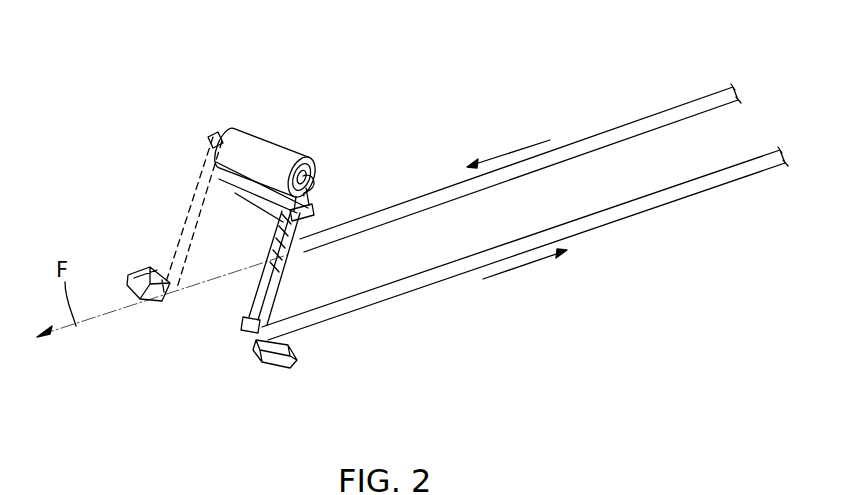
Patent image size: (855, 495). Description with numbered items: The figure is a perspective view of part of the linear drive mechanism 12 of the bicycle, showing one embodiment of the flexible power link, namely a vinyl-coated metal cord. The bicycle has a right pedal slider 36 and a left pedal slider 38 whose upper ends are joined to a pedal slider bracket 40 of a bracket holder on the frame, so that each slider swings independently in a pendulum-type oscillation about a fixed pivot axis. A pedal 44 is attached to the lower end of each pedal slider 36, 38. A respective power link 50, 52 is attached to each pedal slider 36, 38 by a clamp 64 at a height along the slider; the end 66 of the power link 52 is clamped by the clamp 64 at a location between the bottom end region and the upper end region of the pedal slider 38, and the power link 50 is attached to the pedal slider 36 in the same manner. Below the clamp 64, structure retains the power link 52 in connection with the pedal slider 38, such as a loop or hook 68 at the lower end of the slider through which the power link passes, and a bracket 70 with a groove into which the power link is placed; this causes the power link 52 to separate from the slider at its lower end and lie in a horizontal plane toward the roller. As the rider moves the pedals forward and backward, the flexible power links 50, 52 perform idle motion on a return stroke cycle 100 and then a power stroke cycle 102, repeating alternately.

The linear drive mechanism 12 is at (414, 170).
The right pedal slider 36 is at (256, 192).
The left pedal slider 38 is at (277, 293).
The pedal slider bracket 40 is at (262, 150).
The pedal 44 is at (138, 266).
The power link 50 is at (710, 95).
The power link 52 is at (738, 177).
The clamp 64 is at (315, 210).
The end of the power link 66 is at (313, 193).
The loop or hook 68 is at (246, 356).
The bracket 70 is at (243, 318).
The return stroke cycle 100 is at (510, 137).
The power stroke cycle 102 is at (524, 283).